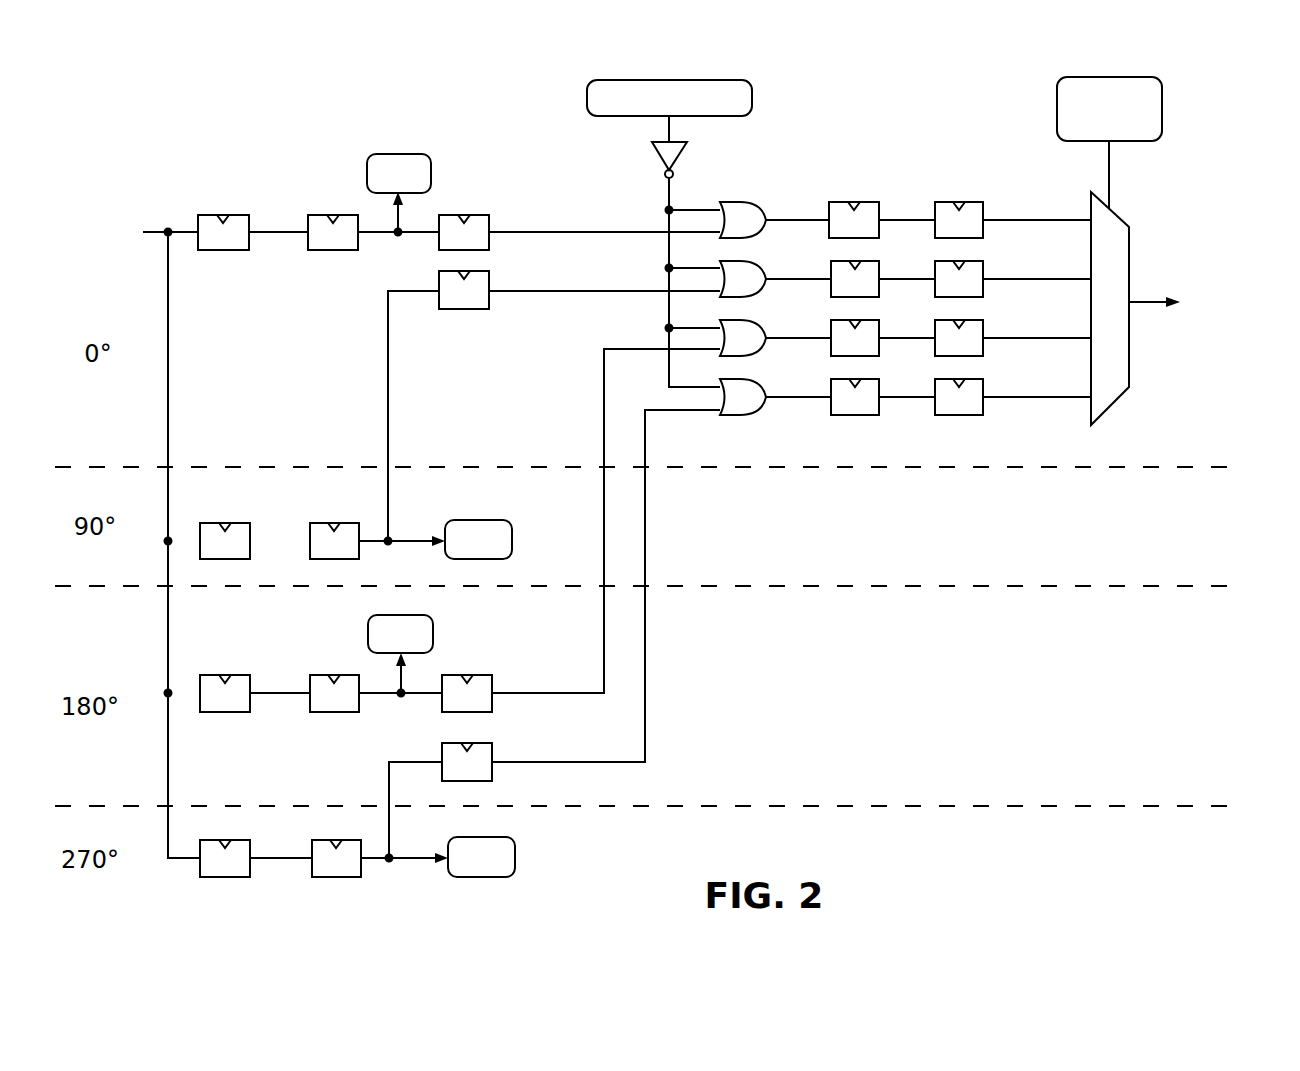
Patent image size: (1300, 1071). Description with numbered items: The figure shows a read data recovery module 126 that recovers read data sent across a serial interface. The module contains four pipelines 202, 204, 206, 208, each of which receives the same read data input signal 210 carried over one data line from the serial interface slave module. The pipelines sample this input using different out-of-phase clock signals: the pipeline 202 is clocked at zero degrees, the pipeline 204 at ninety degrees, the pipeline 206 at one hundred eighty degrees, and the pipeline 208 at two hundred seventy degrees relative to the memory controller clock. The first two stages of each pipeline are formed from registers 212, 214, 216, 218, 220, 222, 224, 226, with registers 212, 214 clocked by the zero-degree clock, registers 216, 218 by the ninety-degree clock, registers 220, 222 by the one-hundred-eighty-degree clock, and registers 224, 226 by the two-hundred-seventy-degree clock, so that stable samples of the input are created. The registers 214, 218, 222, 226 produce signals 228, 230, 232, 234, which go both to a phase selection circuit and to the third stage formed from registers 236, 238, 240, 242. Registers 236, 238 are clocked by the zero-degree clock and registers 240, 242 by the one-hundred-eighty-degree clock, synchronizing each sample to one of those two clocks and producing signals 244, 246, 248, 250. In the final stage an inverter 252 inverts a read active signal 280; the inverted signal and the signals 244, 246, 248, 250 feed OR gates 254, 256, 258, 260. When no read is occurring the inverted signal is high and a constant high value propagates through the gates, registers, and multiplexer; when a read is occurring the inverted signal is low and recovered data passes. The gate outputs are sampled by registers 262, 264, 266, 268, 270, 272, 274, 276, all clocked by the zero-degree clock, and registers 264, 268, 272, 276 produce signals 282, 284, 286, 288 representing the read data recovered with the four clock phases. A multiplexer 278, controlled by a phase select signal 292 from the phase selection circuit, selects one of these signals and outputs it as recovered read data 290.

The read data recovery module 126 is at (370, 108).
The pipeline 202 is at (1199, 447).
The pipeline 204 is at (1201, 558).
The pipeline 206 is at (1201, 760).
The pipeline 208 is at (1201, 853).
The read data input signal 210 is at (89, 167).
The register 212 is at (222, 214).
The register 214 is at (332, 214).
The register 216 is at (216, 522).
The register 218 is at (326, 522).
The register 220 is at (218, 674).
The register 222 is at (328, 674).
The register 224 is at (212, 878).
The register 226 is at (322, 878).
The signal 228 is at (416, 236).
The signal 230 is at (372, 544).
The signal 232 is at (378, 696).
The signal 234 is at (377, 860).
The register 236 is at (471, 214).
The register 238 is at (462, 310).
The register 240 is at (476, 674).
The register 242 is at (493, 773).
The signal 244 is at (602, 228).
The signal 246 is at (602, 288).
The signal 248 is at (558, 690).
The signal 250 is at (608, 759).
The inverter 252 is at (650, 154).
The OR gate 254 is at (767, 212).
The OR gate 256 is at (767, 271).
The OR gate 258 is at (767, 330).
The OR gate 260 is at (767, 389).
The register 262 is at (862, 201).
The register 264 is at (968, 201).
The register 266 is at (862, 260).
The register 268 is at (968, 260).
The register 270 is at (862, 319).
The register 272 is at (968, 319).
The register 274 is at (862, 378).
The register 276 is at (968, 378).
The multiplexer 278 is at (1129, 360).
The read active signal 280 is at (753, 100).
The signal 282 is at (1058, 216).
The signal 284 is at (1058, 275).
The signal 286 is at (1058, 334).
The signal 288 is at (1058, 393).
The recovered read data 290 is at (1227, 233).
The phase select signal 292 is at (1163, 114).